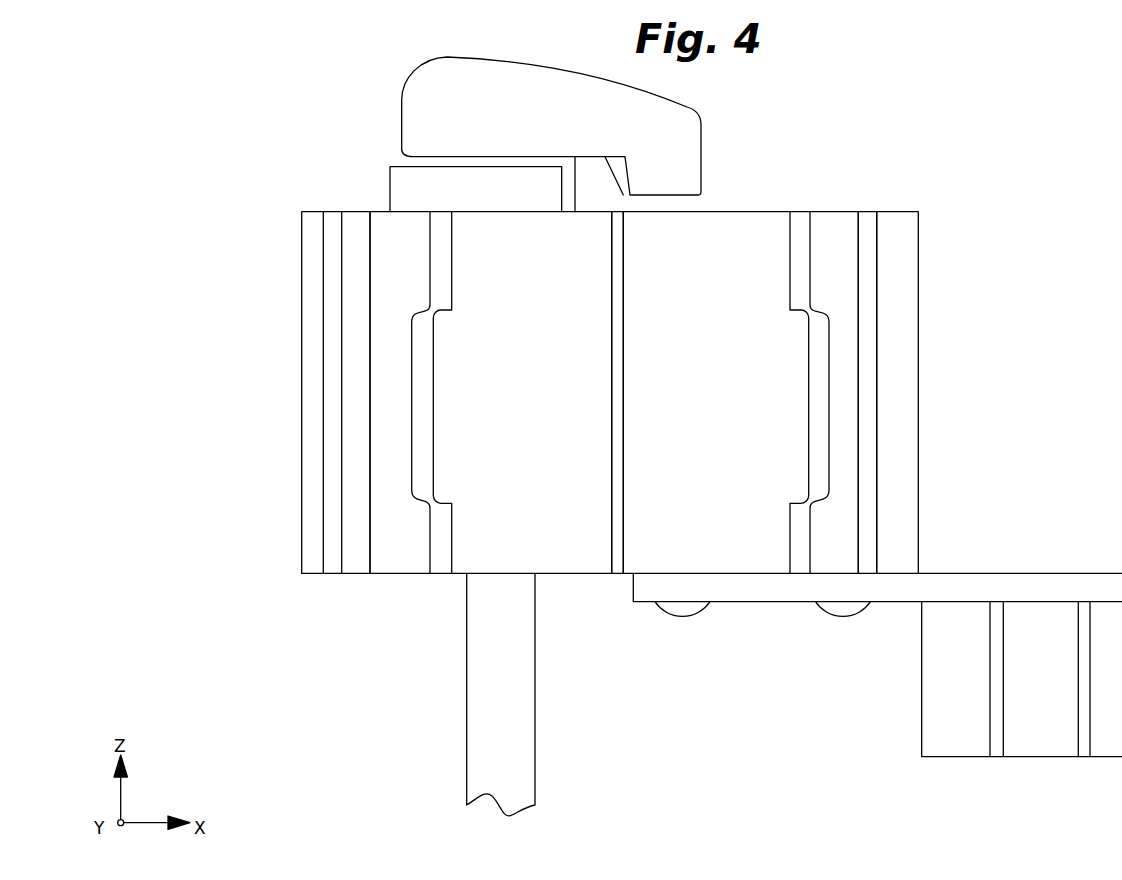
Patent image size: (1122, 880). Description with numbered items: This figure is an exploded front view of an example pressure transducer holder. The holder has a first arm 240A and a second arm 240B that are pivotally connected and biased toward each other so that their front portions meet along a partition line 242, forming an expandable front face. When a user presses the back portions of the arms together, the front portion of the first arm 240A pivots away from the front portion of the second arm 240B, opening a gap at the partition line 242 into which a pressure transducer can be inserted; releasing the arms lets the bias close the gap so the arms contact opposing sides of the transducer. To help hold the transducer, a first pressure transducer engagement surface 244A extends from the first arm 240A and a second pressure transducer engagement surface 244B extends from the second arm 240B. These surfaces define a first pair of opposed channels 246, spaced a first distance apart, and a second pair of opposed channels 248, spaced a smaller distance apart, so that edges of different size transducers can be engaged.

The first arm 240A is at (740, 393).
The second arm 240B is at (491, 393).
The partition line 242 is at (620, 238).
The first pressure transducer engagement surface 244A is at (933, 225).
The second pressure transducer engagement surface 244B is at (288, 237).
The first pair of opposed channels 246 is at (867, 560).
The second pair of opposed channels 248 is at (800, 560).